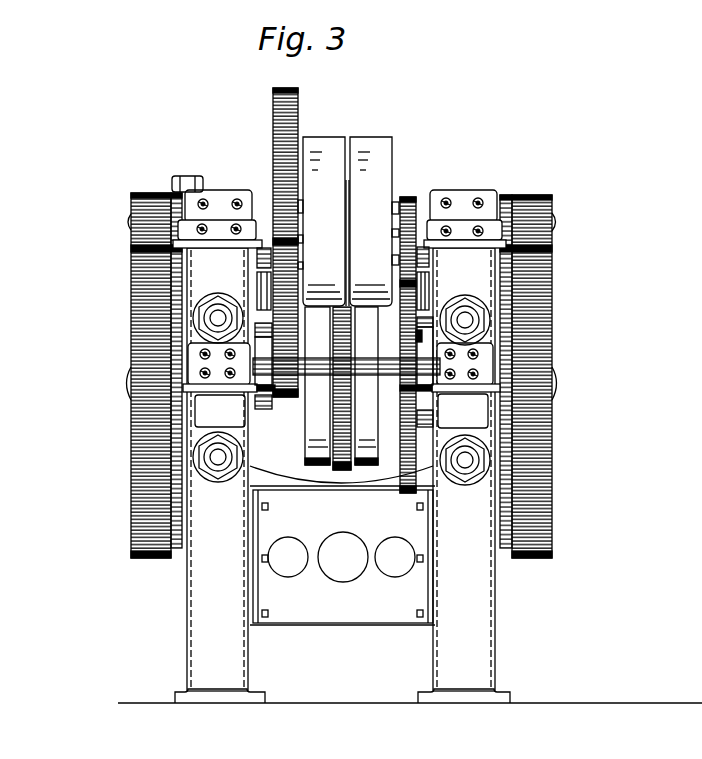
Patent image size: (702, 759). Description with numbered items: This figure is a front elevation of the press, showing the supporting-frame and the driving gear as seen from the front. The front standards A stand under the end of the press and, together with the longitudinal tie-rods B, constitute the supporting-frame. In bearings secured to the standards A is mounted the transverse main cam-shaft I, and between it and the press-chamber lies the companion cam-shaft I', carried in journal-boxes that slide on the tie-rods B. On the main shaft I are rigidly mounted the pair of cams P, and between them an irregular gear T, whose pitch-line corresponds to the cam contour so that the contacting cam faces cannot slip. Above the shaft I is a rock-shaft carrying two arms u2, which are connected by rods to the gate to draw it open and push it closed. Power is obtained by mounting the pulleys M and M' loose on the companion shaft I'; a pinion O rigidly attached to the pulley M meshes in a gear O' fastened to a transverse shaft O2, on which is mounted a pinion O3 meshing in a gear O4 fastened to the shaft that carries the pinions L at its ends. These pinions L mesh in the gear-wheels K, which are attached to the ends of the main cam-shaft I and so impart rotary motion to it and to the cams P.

The standards A is at (474, 581).
The longitudinal rods B is at (217, 312).
The gear-wheel K is at (131, 462).
The main cam-shaft I is at (155, 197).
The companion cam-shaft I' is at (563, 219).
The pinions L is at (523, 195).
The arms u2 is at (436, 291).
The pinion O is at (408, 334).
The gear O' is at (399, 341).
The transverse shaft O2 is at (320, 354).
The pinion O3 is at (289, 398).
The gear O4 is at (275, 128).
The pulley M is at (321, 209).
The pulley M' is at (372, 205).
The cams P is at (341, 386).
The irregular gear T is at (342, 471).